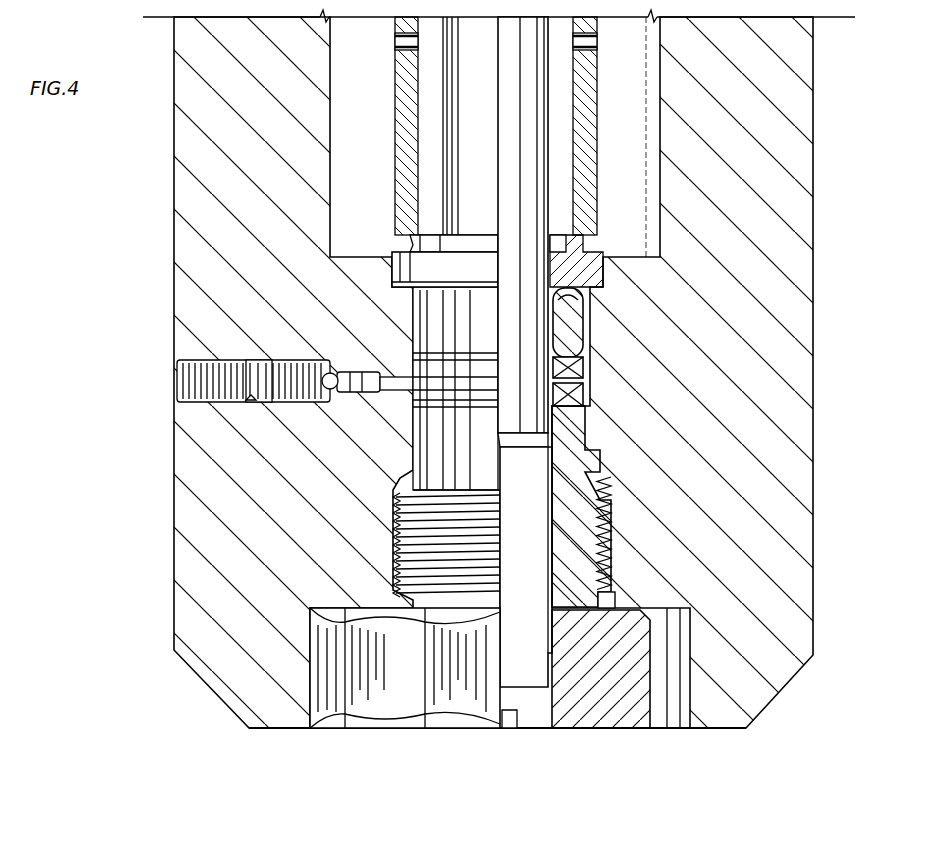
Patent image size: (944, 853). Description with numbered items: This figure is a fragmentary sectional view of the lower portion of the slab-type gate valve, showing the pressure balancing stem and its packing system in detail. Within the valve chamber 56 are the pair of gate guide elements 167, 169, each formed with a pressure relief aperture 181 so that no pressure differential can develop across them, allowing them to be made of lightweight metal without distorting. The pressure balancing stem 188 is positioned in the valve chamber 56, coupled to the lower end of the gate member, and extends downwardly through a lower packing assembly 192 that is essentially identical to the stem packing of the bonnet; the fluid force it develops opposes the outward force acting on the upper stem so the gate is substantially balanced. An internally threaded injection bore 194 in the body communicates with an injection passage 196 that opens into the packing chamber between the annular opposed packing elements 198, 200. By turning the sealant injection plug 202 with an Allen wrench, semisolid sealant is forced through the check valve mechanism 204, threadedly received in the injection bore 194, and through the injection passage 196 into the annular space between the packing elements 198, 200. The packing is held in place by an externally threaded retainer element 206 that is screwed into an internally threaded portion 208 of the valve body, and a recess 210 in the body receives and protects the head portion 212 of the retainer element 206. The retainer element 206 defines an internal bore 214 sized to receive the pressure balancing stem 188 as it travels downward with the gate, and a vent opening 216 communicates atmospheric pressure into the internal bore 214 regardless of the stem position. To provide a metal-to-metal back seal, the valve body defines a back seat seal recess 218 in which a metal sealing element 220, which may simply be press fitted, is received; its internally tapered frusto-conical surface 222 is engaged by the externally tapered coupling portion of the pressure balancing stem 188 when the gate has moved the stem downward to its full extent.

The valve chamber 56 is at (662, 125).
The gate guide element 167 is at (405, 106).
The gate guide element 169 is at (590, 94).
The pressure relief aperture 181 is at (404, 42).
The pressure balancing stem 188 is at (455, 166).
The lower packing assembly 192 is at (585, 316).
The injection bore 194 is at (250, 401).
The injection passage 196 is at (372, 370).
The packing element 198 is at (583, 367).
The packing element 200 is at (583, 395).
The sealant injection plug 202 is at (200, 372).
The check valve mechanism 204 is at (312, 403).
The retainer element 206 is at (605, 560).
The internally threaded portion 208 is at (608, 594).
The recess 210 is at (673, 700).
The head portion 212 is at (400, 702).
The internal bore 214 is at (553, 520).
The vent opening 216 is at (508, 730).
The back seat seal recess 218 is at (603, 258).
The metal sealing element 220 is at (410, 240).
The frusto-conical surface 222 is at (560, 240).